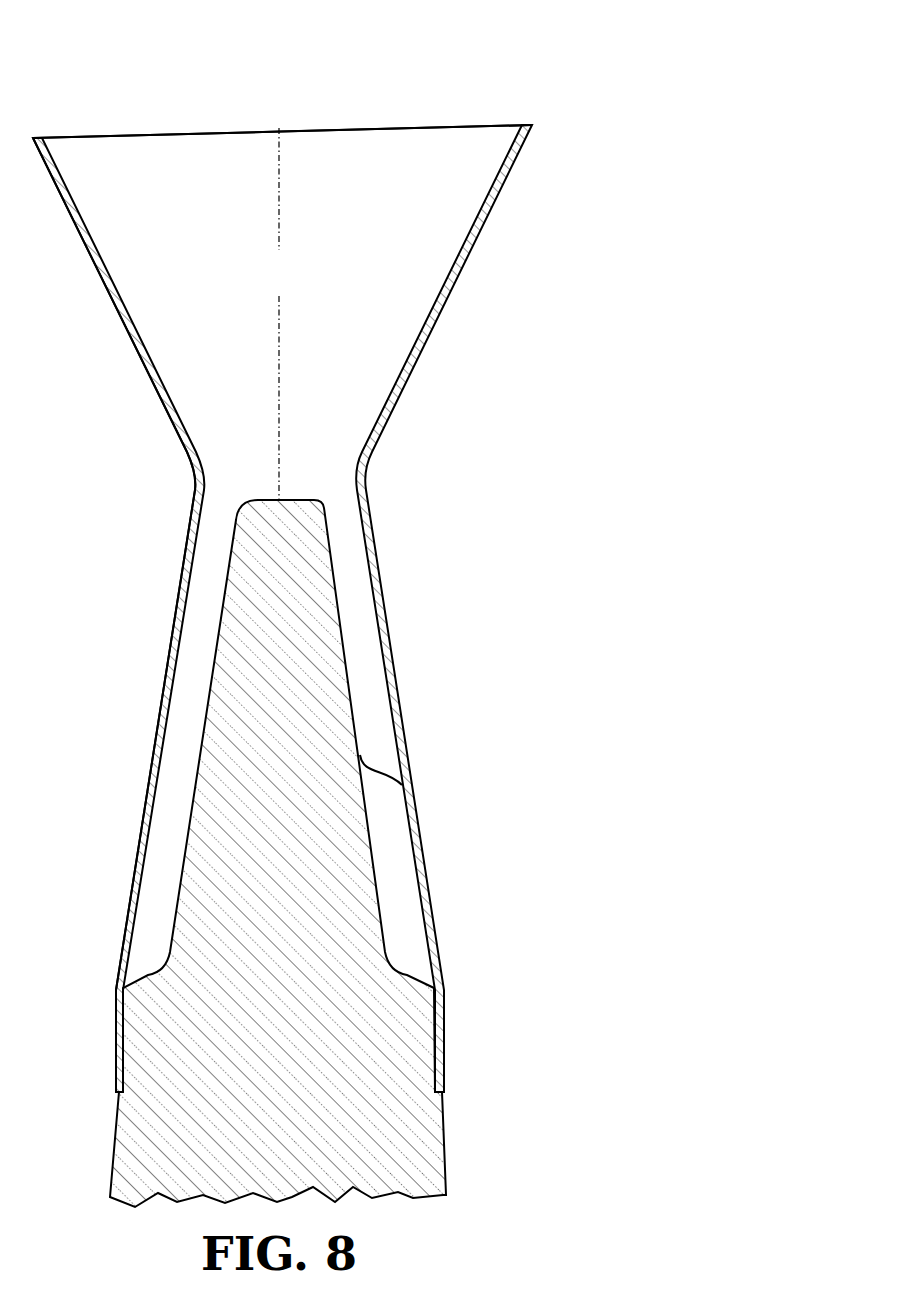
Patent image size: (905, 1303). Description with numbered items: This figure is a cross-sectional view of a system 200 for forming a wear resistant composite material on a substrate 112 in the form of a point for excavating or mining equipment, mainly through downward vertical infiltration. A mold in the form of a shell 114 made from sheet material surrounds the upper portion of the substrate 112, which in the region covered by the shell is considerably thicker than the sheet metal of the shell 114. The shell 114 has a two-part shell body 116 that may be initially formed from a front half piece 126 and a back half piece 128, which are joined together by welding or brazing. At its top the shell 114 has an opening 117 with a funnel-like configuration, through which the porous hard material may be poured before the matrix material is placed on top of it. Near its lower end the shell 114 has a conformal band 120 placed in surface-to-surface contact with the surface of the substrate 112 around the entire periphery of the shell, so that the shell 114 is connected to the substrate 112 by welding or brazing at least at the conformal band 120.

The system 200 is at (482, 73).
The substrate 112 is at (300, 1077).
The shell 114 is at (165, 625).
The two-part shell body 116 is at (148, 773).
The opening 117 is at (262, 290).
The conformal band 120 is at (104, 993).
The front half piece 126 is at (277, 121).
The back half piece 128 is at (283, 122).